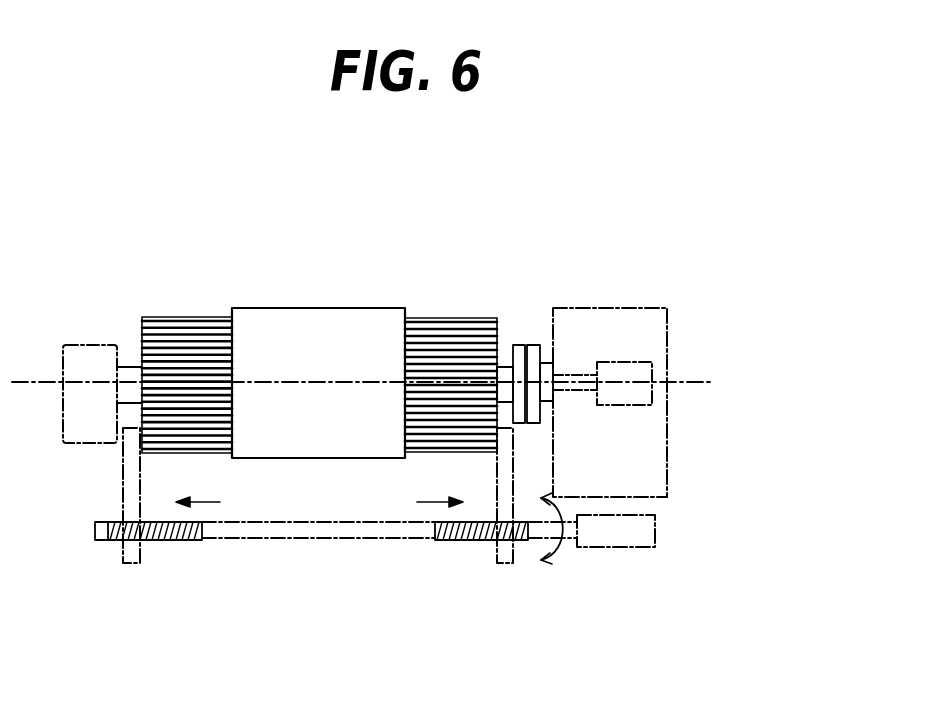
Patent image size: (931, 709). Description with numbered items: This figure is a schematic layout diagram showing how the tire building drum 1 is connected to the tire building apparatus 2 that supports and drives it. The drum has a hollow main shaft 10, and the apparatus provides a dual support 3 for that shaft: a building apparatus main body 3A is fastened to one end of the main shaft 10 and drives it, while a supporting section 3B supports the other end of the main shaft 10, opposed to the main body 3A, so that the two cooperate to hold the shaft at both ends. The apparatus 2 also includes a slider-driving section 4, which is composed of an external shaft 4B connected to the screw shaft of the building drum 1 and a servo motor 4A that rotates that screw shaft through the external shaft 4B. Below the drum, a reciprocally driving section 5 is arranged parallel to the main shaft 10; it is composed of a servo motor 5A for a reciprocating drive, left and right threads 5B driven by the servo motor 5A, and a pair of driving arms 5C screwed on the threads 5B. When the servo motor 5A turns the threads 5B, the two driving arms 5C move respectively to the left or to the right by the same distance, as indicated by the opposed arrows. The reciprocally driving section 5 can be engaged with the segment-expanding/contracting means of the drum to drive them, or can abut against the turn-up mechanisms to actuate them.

The tire building drum 1 is at (430, 327).
The tire building apparatus 2 is at (573, 240).
The building apparatus main body and supporting section 3 is at (115, 298).
The building apparatus main body 3A is at (582, 327).
The supporting section 3B is at (78, 347).
The slider-driving section 4 is at (740, 273).
The servo motor 4A is at (632, 370).
The external shaft 4B is at (577, 377).
The reciprocally driving section 5 is at (373, 632).
The servo motor 5A is at (622, 537).
The left and right threads 5B is at (323, 528).
The driving arms 5C is at (131, 478).
The main shaft 10 is at (517, 345).